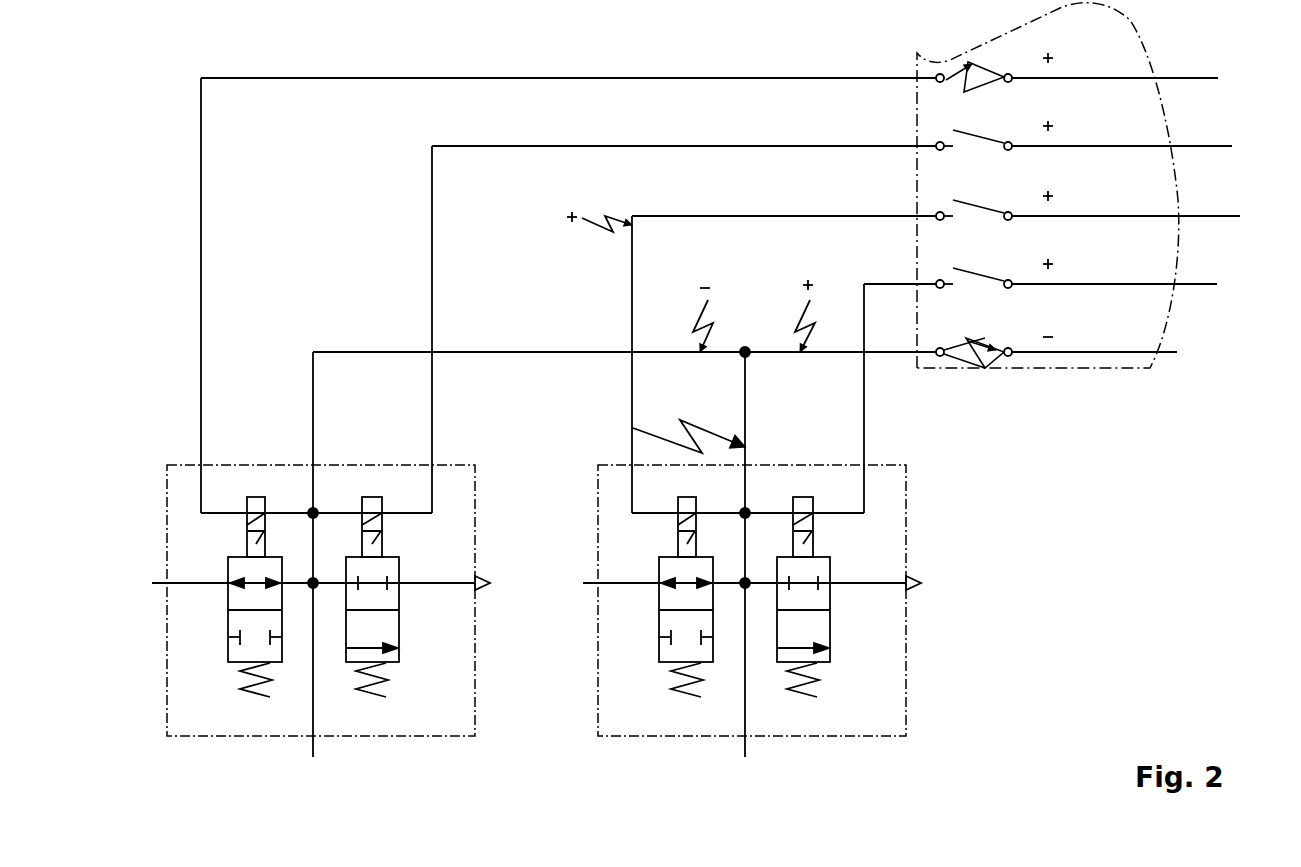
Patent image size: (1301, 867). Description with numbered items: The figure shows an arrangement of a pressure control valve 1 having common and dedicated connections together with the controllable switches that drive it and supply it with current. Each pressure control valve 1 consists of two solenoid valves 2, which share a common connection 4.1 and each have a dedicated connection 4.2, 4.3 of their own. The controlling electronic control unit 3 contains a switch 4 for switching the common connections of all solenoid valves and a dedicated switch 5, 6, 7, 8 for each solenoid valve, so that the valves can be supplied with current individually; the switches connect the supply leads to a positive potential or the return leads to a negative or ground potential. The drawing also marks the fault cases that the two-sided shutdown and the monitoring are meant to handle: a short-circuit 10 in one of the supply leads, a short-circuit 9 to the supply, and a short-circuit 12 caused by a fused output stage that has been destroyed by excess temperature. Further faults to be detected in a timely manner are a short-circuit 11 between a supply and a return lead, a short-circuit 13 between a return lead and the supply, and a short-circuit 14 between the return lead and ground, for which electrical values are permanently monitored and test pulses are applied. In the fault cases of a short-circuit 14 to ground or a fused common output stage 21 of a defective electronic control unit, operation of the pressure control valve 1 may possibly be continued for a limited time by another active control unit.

The pressure control valve 1 is at (480, 520).
The solenoid valve 2 is at (792, 520).
The electronic control unit 3 is at (930, 378).
The switch 4 is at (993, 367).
The dedicated switch 5 is at (993, 298).
The dedicated switch 6 is at (993, 228).
The dedicated switch 7 is at (993, 158).
The dedicated switch 8 is at (993, 88).
The short-circuit to the supply 9 is at (599, 241).
The short-circuit in a supply lead 10 is at (895, 278).
The short-circuit between supply and return lead 11 is at (668, 447).
The short-circuit due to fused output stage 12 is at (977, 55).
The short-circuit between return lead and supply 13 is at (791, 316).
The short-circuit between return lead and ground 14 is at (690, 320).
The fused common output stage 21 is at (978, 372).
The common connection 4.1 is at (545, 552).
The dedicated connection 4.2 is at (436, 295).
The dedicated connection 4.3 is at (667, 329).